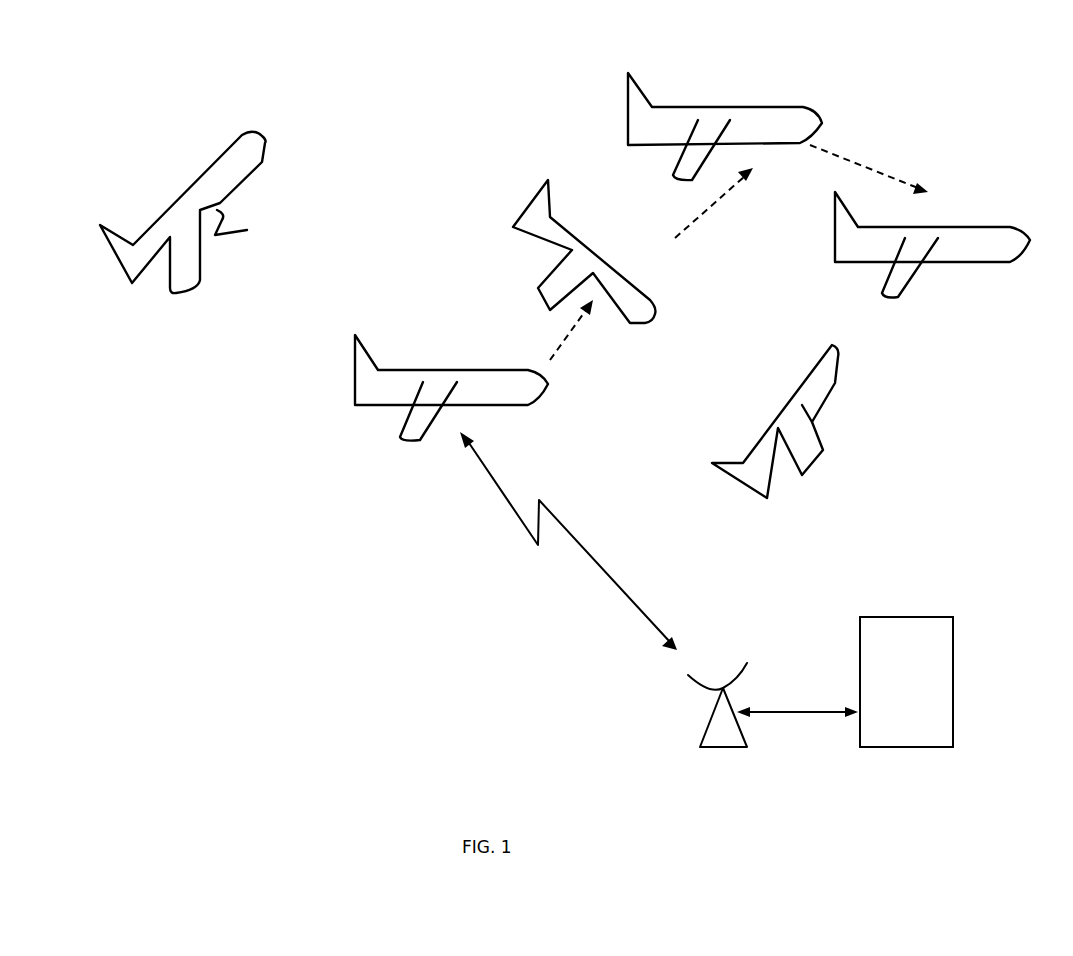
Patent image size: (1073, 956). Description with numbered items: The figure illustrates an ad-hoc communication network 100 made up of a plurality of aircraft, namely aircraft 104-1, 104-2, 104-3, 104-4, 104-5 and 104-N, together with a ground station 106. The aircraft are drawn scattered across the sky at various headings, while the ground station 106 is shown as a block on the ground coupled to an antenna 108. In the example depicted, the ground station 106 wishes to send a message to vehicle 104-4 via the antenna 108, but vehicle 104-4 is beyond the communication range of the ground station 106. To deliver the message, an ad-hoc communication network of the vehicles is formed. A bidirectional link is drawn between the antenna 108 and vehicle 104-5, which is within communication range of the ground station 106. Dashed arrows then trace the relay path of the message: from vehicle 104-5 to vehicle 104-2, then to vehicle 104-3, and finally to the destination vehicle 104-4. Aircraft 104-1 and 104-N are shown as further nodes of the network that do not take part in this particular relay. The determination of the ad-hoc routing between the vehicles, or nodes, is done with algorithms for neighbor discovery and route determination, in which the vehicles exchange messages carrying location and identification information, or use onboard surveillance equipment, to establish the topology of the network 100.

The ad-hoc communication network 100 is at (380, 88).
The aircraft 104-1 is at (196, 214).
The aircraft 104-2 is at (583, 247).
The aircraft 104-3 is at (753, 118).
The aircraft 104-4 is at (973, 247).
The aircraft 104-5 is at (505, 393).
The aircraft 104-N is at (813, 395).
The ground station 106 is at (924, 681).
The antenna 108 is at (723, 723).